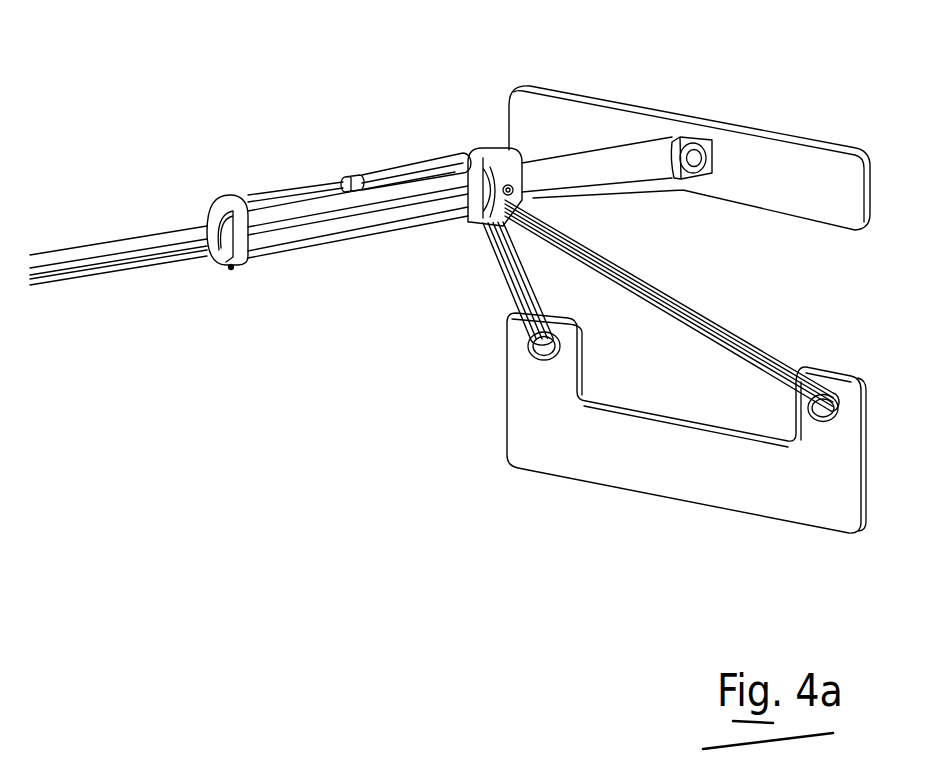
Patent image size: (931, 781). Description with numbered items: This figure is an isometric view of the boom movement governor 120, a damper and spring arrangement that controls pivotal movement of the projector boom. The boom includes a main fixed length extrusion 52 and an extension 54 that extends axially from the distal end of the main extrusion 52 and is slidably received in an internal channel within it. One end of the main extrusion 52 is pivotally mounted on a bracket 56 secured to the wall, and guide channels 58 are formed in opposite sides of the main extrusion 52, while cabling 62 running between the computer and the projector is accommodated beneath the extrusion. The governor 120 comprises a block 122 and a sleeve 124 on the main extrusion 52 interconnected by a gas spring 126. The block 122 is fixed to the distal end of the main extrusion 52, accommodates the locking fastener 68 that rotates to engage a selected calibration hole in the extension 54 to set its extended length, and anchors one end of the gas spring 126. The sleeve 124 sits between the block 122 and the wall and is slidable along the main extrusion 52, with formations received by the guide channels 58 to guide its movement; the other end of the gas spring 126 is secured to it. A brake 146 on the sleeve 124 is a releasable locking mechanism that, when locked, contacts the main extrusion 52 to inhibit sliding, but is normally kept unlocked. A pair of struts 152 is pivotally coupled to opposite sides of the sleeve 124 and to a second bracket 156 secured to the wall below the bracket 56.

The boom movement governor 120 is at (347, 142).
The block 122 is at (230, 200).
The sleeve 124 is at (492, 158).
The gas spring 126 is at (403, 169).
The brake 146 is at (507, 188).
The bracket 56 is at (815, 160).
The guide channels 58 is at (594, 188).
The cabling 62 is at (672, 181).
The locking fastener 68 is at (232, 266).
The main fixed length extrusion 52 is at (304, 252).
The extension 54 is at (83, 280).
The struts 152 is at (763, 355).
The bracket 156 is at (684, 490).